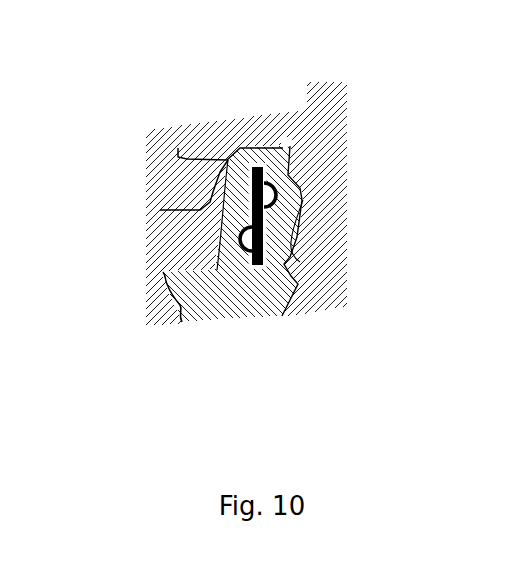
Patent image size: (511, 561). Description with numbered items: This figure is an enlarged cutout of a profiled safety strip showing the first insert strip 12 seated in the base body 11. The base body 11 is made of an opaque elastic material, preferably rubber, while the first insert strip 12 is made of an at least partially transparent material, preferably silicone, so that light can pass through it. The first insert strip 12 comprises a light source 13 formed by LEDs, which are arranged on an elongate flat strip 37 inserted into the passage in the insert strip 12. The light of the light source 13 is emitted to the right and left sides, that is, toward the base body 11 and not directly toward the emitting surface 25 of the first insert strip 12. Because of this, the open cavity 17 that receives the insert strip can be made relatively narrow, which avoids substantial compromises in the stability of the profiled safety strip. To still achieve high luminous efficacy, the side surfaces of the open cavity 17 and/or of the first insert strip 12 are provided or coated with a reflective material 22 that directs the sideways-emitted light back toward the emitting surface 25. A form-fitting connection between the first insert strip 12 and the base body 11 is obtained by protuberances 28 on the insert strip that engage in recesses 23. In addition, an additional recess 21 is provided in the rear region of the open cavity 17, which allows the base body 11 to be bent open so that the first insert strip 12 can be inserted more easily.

The base body 11 is at (155, 311).
The first insert strip 12 is at (247, 283).
The light source 13 is at (278, 202).
The open cavity 17 is at (178, 148).
The additional recess 21 is at (297, 141).
The reflective material 22 is at (160, 210).
The recesses 23 is at (163, 272).
The emitting surface 25 is at (273, 315).
The protuberances 28 is at (290, 273).
The flat strip 37 is at (252, 167).